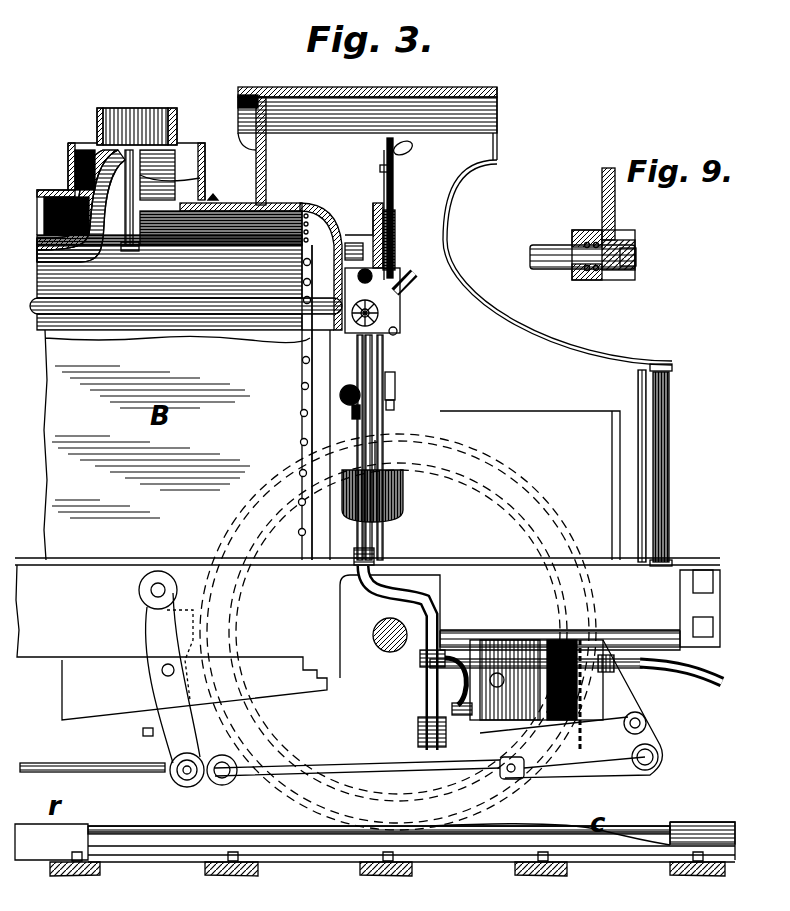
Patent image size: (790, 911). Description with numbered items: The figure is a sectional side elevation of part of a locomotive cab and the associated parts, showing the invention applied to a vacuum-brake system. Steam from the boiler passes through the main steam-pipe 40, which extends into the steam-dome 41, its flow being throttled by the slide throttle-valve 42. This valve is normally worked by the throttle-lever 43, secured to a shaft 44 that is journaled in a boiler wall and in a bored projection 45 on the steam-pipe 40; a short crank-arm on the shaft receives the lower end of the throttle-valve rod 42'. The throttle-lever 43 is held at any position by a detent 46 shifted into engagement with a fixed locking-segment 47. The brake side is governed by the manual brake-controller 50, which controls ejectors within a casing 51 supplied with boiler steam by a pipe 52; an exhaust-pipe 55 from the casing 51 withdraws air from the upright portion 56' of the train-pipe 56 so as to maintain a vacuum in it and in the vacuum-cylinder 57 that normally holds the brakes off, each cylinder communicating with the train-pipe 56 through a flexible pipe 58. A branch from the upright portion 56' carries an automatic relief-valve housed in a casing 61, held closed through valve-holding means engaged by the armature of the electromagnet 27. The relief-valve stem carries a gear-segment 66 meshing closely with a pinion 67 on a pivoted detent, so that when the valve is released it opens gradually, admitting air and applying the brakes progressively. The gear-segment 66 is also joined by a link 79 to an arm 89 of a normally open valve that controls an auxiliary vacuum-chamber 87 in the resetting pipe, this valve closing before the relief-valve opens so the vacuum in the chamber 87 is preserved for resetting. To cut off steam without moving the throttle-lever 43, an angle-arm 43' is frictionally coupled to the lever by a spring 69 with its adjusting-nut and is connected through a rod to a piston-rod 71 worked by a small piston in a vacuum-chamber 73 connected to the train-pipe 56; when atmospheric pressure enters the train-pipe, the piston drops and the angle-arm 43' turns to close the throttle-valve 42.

In FIG. 3, the electromagnet 27 is at (392, 238).
In FIG. 3, the main steam-pipe 40 is at (102, 258).
In FIG. 3, the steam-dome 41 is at (180, 153).
In FIG. 3, the throttle-valve 42 is at (138, 189).
In FIG. 3, the throttle-valve rod 42' is at (225, 186).
In FIG. 3, the throttle-lever 43 is at (373, 208).
In FIG. 9, the throttle-lever 43 is at (627, 204).
In FIG. 9, the angle-arm 43' is at (623, 253).
In FIG. 3, the shaft 44 is at (264, 255).
In FIG. 9, the shaft 44 is at (551, 247).
In FIG. 3, the bored projection 45 is at (130, 252).
In FIG. 3, the detent 46 is at (385, 203).
In FIG. 3, the locking-segment 47 is at (370, 222).
In FIG. 3, the manual brake-controller 50 is at (399, 308).
In FIG. 3, the casing 51 is at (398, 288).
In FIG. 3, the pipe 52 is at (370, 273).
In FIG. 3, the exhaust-pipe 55 is at (206, 318).
In FIG. 3, the train-pipe 56 is at (576, 637).
In FIG. 3, the upright portion of train-pipe 56' is at (394, 547).
In FIG. 3, the vacuum-cylinder 57 is at (543, 717).
In FIG. 3, the flexible pipe 58 is at (452, 718).
In FIG. 3, the valve casing 61 is at (347, 406).
In FIG. 3, the gear-segment 66 is at (385, 348).
In FIG. 3, the pinion 67 is at (397, 331).
In FIG. 9, the spring 69 is at (598, 286).
In FIG. 3, the piston-rod 71 is at (379, 462).
In FIG. 3, the vacuum-chamber 73 is at (404, 495).
In FIG. 3, the link 79 is at (396, 382).
In FIG. 3, the auxiliary vacuum-chamber 87 is at (347, 350).
In FIG. 3, the arm 89 is at (395, 404).